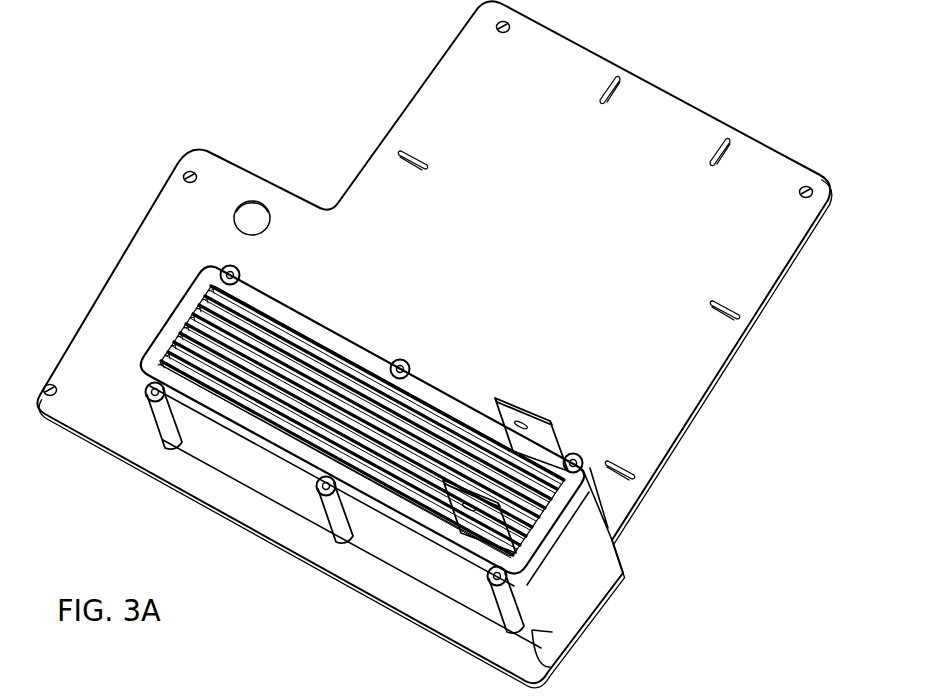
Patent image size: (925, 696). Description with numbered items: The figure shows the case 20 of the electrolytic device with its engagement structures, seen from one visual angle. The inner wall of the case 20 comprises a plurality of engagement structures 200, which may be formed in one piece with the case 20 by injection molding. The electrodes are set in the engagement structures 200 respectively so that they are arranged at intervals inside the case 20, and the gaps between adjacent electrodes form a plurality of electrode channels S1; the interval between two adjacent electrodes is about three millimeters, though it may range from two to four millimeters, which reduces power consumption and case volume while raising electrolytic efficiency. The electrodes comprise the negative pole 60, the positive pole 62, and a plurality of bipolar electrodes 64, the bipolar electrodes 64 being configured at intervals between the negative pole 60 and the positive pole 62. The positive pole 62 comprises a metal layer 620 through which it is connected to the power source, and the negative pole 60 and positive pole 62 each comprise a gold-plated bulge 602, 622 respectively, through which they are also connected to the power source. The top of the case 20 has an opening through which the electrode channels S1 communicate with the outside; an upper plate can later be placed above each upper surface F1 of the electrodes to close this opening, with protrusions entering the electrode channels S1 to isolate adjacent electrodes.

The engagement structures 200 is at (158, 366).
The case 20 is at (563, 540).
The negative pole 60 is at (427, 523).
The gold-plated bulge 602 is at (473, 538).
The bipolar electrodes 64 is at (203, 384).
The positive pole 62 is at (330, 352).
The metal layer 620 is at (472, 433).
The gold-plated bulge 622 is at (535, 443).
The upper surface F1 is at (400, 358).
The electrode channels S1 is at (237, 328).